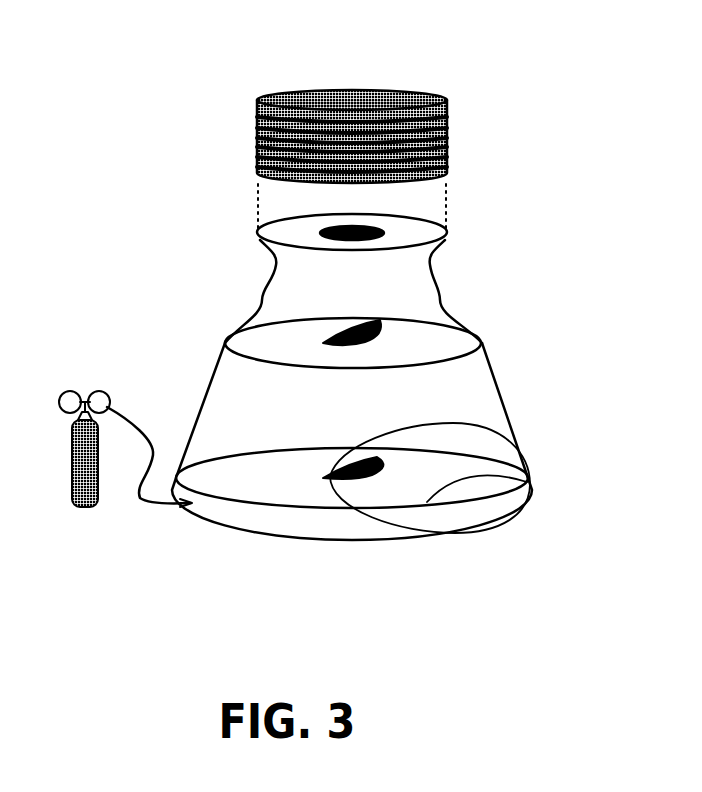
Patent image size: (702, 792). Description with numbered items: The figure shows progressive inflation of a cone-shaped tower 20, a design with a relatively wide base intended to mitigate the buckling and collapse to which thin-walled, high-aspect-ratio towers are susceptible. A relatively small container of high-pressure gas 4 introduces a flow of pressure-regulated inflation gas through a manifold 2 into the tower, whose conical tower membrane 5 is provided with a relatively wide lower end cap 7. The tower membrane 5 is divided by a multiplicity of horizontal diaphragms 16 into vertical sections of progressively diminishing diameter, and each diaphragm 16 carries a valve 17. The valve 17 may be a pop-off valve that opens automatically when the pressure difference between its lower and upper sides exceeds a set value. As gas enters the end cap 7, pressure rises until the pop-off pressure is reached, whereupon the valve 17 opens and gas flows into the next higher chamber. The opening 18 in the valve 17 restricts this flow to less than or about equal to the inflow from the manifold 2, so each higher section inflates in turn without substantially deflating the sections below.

The cone-shaped tower 20 is at (124, 37).
The manifold 2 is at (133, 507).
The container of high-pressure gas 4 is at (72, 485).
The conical tower membrane 5 is at (223, 355).
The lower end cap 7 is at (330, 546).
The horizontal diaphragms 16 is at (530, 480).
The valve 17 is at (505, 430).
The opening 18 is at (367, 483).